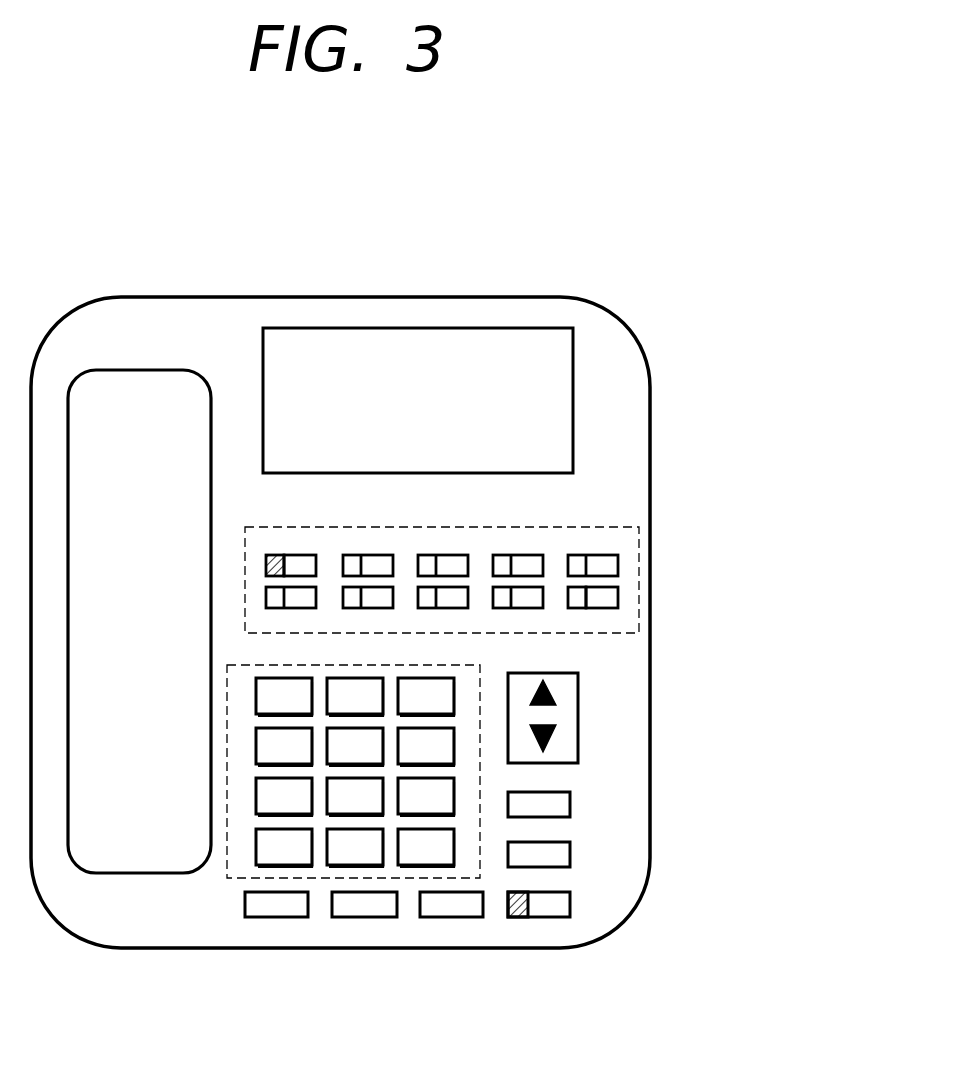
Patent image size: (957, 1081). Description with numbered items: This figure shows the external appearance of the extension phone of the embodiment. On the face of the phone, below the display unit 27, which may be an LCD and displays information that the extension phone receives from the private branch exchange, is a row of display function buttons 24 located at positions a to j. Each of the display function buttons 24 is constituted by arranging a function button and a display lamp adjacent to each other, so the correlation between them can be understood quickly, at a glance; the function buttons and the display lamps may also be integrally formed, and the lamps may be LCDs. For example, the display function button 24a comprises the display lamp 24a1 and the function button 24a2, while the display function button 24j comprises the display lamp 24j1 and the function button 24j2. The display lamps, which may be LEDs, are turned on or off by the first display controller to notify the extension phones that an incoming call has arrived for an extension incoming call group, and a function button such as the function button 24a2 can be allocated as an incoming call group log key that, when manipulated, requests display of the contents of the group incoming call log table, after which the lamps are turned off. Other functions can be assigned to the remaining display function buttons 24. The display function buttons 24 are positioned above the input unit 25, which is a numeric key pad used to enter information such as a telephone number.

The display function buttons 24 is at (509, 418).
The display function button 24a is at (271, 371).
The display lamp 24a1 is at (270, 557).
The function button 24a2 is at (299, 566).
The display function button 24j is at (696, 618).
The display lamp 24j1 is at (580, 603).
The function button 24j2 is at (612, 596).
The input unit 25 is at (480, 784).
The display unit 27 is at (573, 382).